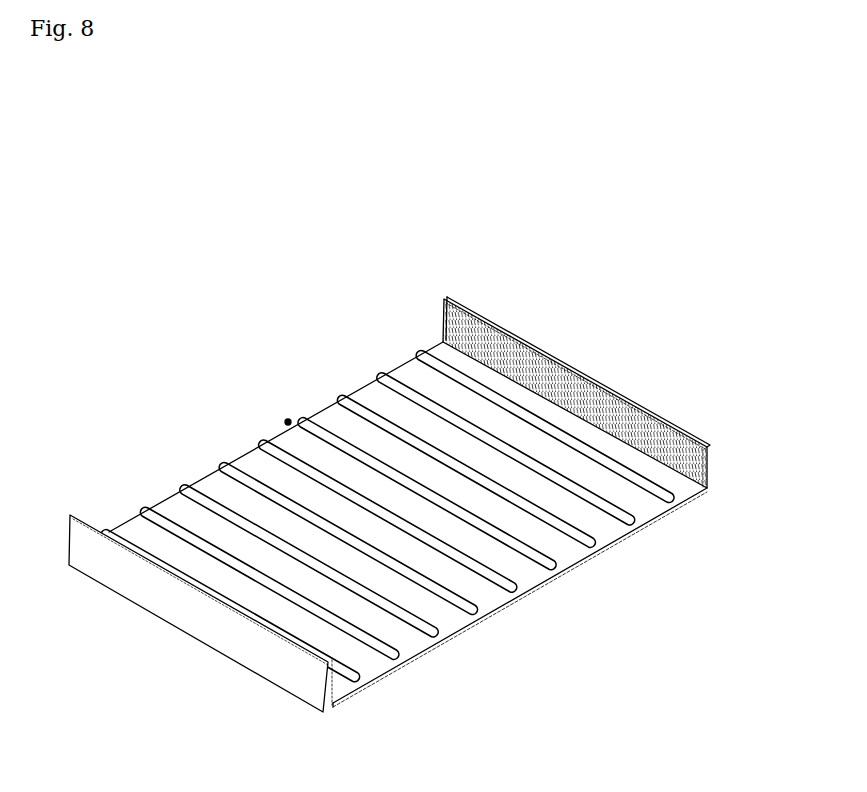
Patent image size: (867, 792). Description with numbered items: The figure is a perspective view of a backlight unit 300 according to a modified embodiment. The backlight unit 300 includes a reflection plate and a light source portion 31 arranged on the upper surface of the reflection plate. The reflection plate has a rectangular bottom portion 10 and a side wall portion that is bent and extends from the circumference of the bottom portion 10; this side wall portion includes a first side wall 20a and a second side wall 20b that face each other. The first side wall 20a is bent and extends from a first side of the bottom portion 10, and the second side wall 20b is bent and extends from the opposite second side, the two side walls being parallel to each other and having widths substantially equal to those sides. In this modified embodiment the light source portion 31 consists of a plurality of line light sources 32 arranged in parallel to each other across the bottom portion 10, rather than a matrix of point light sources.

The backlight unit 300 is at (552, 237).
The bottom portion 10 is at (525, 577).
The first side wall 20a is at (668, 433).
The second side wall 20b is at (273, 655).
The light source portion 31 is at (286, 419).
The line light sources 32 is at (440, 634).